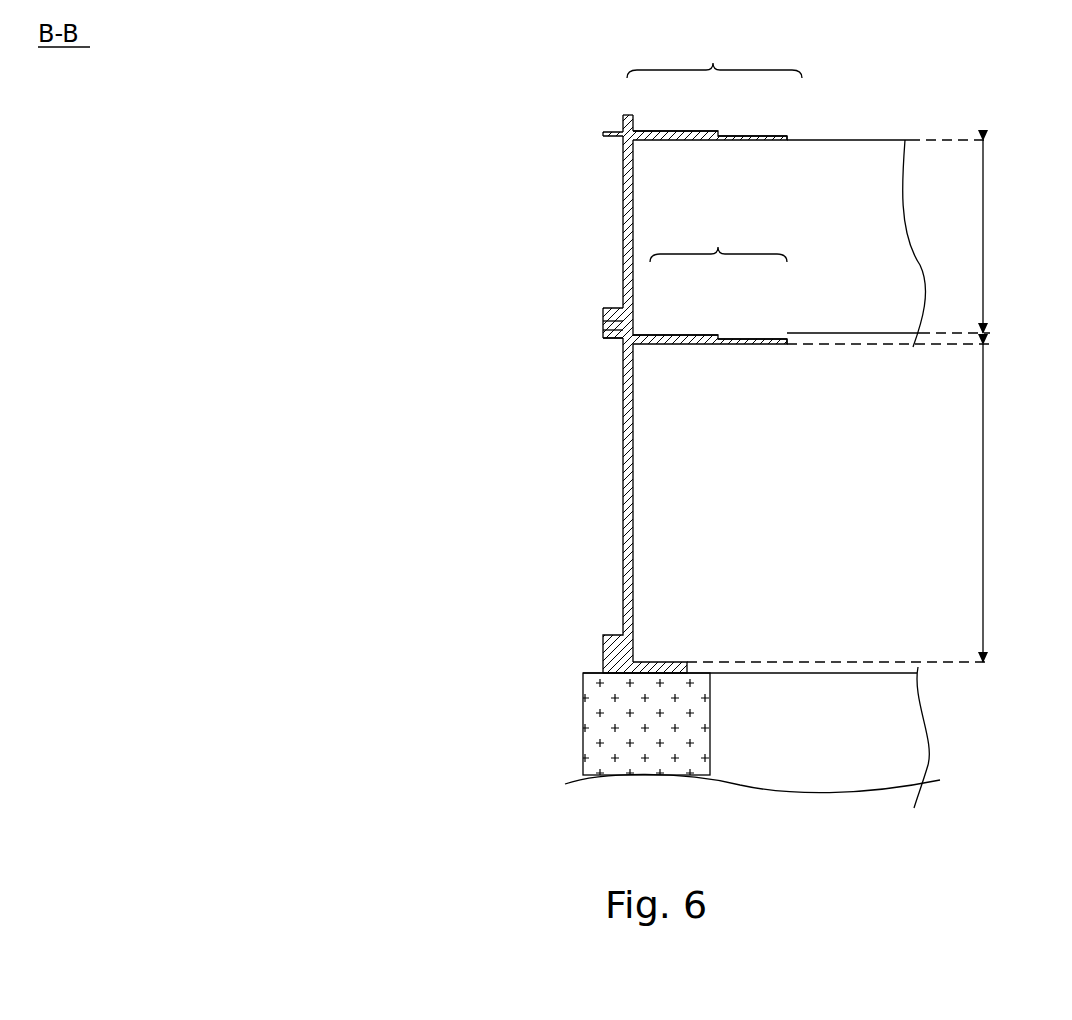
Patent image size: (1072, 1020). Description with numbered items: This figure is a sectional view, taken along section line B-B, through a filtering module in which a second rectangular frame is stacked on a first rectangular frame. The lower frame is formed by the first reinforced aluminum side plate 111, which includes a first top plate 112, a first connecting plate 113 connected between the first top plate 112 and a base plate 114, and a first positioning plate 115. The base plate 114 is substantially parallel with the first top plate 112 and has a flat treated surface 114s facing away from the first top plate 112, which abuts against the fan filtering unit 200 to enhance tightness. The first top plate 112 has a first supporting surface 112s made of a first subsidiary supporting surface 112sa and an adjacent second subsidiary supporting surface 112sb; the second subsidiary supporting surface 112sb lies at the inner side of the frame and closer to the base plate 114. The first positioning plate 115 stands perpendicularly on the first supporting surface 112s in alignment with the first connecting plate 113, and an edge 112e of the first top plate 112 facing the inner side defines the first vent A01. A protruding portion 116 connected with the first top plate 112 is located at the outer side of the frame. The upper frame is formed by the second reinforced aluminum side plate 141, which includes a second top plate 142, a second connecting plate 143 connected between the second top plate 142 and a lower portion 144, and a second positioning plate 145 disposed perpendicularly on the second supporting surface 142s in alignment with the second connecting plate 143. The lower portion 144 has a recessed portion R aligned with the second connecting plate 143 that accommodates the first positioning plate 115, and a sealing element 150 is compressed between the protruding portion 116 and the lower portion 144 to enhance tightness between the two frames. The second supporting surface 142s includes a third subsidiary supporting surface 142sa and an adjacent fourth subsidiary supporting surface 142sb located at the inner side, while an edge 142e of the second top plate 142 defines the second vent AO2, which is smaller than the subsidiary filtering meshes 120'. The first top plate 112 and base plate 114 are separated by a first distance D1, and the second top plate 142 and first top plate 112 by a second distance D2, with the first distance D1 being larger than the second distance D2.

The first reinforced aluminum side plate 111 is at (512, 426).
The first top plate 112 is at (698, 345).
The edge of the first top plate 112e is at (788, 345).
The first supporting surface 112s is at (718, 240).
The first subsidiary supporting surface 112sa is at (684, 335).
The second subsidiary supporting surface 112sb is at (745, 339).
The first connecting plate 113 is at (628, 488).
The base plate 114 is at (668, 662).
The treated surface 114s is at (612, 676).
The first positioning plate 115 is at (603, 321).
The protruding portion 116 is at (605, 338).
The subsidiary filtering meshes 120' is at (906, 443).
The second reinforced aluminum side plate 141 is at (512, 178).
The second top plate 142 is at (695, 141).
The edge of the second top plate 142e is at (790, 138).
The second supporting surface 142s is at (714, 57).
The third subsidiary supporting surface 142sa is at (678, 130).
The fourth subsidiary supporting surface 142sb is at (752, 136).
The second connecting plate 143 is at (628, 230).
The lower portion 144 is at (603, 315).
The second positioning plate 145 is at (623, 120).
The sealing element 150 is at (603, 330).
The fan filtering unit 200 is at (583, 738).
The first vent A01 is at (855, 366).
The second vent AO2 is at (856, 174).
The first distance D1 is at (1008, 503).
The second distance D2 is at (1007, 236).
The recessed portion R is at (624, 311).